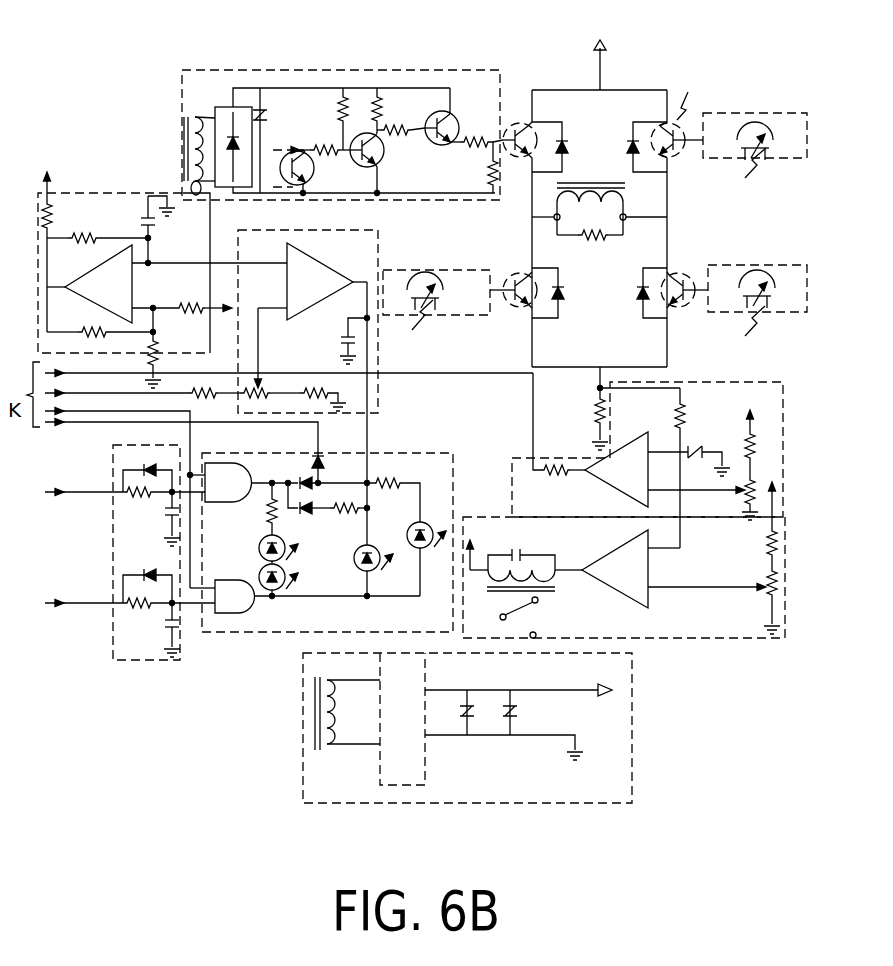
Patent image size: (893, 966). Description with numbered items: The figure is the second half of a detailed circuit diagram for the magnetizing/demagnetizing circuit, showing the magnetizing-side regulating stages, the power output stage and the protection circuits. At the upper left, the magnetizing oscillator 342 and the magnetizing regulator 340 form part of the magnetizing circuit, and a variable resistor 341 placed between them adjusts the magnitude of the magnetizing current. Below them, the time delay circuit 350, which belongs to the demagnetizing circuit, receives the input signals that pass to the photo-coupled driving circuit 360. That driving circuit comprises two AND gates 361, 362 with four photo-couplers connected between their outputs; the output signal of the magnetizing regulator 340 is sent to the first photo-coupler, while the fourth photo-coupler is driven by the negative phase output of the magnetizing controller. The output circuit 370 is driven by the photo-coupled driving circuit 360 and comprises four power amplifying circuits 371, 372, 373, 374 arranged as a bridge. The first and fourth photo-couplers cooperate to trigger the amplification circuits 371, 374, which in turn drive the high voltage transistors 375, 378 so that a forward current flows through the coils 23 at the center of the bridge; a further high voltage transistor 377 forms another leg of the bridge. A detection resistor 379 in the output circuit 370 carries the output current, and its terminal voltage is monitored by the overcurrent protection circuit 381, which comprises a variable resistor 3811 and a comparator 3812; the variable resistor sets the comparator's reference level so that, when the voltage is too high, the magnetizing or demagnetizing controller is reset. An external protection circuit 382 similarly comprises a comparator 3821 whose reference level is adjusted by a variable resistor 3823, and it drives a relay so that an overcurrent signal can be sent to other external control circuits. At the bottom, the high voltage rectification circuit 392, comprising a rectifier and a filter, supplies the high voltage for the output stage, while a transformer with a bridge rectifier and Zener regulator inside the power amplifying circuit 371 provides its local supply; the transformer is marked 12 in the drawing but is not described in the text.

The transformer 12 is at (199, 144).
The coils 23 is at (611, 210).
The magnetizing regulator 340 is at (287, 348).
The variable resistor 341 is at (282, 359).
The magnetizing oscillator 342 is at (148, 266).
The time delay circuit 350 is at (153, 667).
The photo-coupled driving circuit 360 is at (321, 560).
The AND gate 361 is at (253, 463).
The AND gate 362 is at (250, 616).
The output circuit 370 is at (599, 193).
The power amplifying circuit 371 is at (342, 108).
The power amplifying circuit 372 is at (761, 117).
The power amplifying circuit 373 is at (447, 280).
The power amplifying circuit 374 is at (757, 284).
The high voltage transistor 375 is at (535, 159).
The high voltage transistor 377 is at (541, 318).
The high voltage transistor 378 is at (662, 315).
The detection resistor 379 is at (598, 408).
The overcurrent protection circuit 381 is at (684, 446).
The external protection circuit 382 is at (647, 587).
The variable resistor 3811 is at (794, 456).
The comparator 3812 is at (626, 434).
The comparator 3821 is at (652, 572).
The variable resistor 3823 is at (796, 577).
The high voltage rectification circuit 392 is at (299, 801).